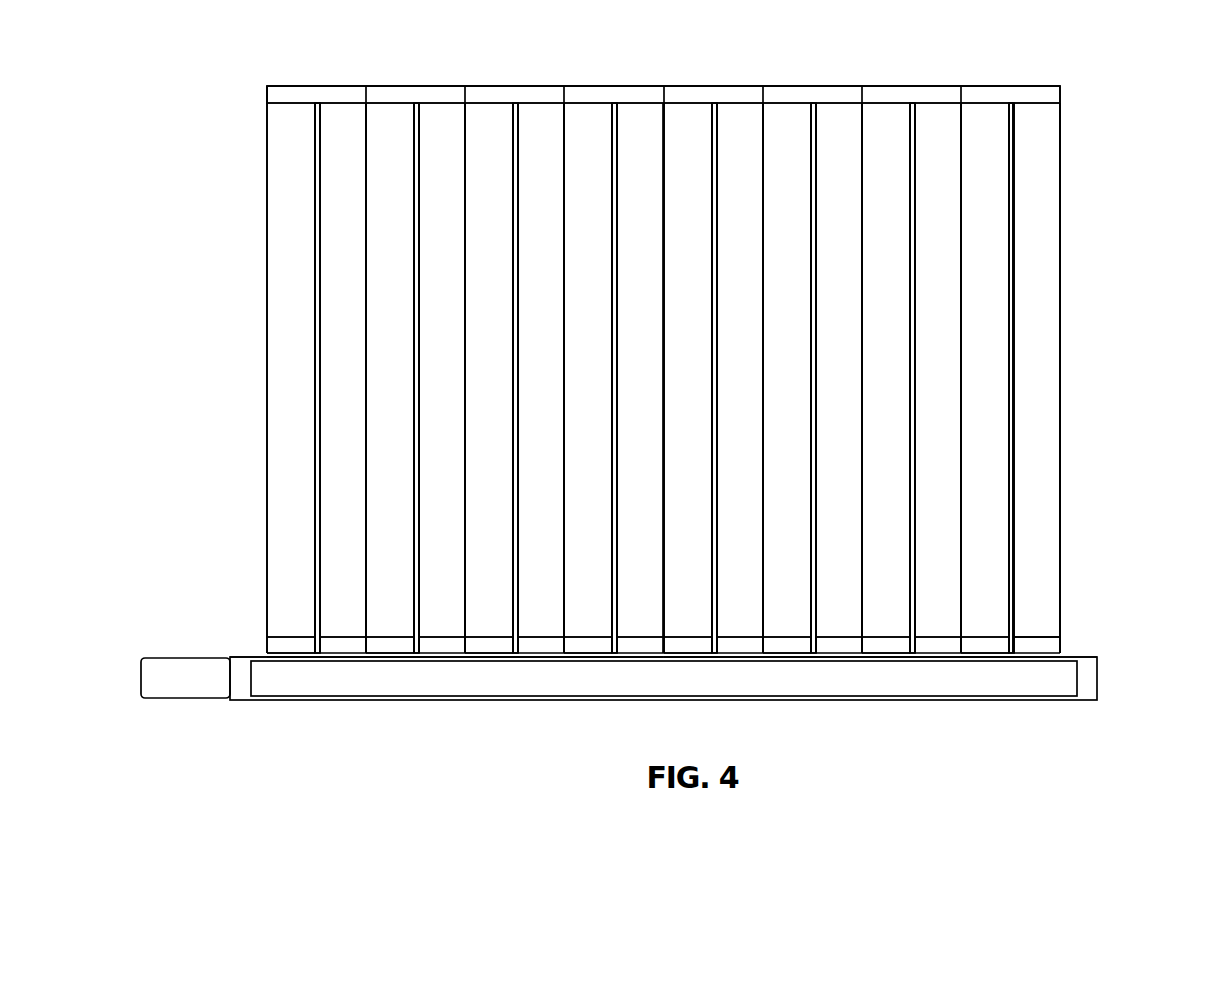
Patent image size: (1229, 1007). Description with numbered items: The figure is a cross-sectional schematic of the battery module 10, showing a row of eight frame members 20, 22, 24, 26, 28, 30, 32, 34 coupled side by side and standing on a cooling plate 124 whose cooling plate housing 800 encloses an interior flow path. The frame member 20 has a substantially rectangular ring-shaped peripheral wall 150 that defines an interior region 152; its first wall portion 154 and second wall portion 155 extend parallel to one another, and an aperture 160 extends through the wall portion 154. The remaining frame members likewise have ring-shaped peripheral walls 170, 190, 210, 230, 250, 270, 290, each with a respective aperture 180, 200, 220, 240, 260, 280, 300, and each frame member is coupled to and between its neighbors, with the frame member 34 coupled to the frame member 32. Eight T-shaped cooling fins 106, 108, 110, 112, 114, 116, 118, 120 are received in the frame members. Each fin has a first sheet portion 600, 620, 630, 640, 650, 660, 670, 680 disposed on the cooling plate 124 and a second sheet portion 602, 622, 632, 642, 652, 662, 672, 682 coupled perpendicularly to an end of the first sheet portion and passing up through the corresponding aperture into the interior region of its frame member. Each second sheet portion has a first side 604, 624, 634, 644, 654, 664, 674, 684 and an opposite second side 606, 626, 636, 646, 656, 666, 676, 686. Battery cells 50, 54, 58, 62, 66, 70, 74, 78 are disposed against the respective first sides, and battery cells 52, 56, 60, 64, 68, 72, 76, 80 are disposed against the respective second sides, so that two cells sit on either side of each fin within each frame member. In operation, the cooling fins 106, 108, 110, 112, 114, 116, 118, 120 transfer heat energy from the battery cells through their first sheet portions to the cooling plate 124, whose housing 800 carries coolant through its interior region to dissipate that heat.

The battery module 10 is at (1172, 124).
The battery cell 50 is at (1047, 122).
The peripheral wall 150 is at (1043, 93).
The interior region 152 is at (1050, 632).
The first wall portion 154 is at (1037, 596).
The second wall portion 155 is at (1035, 104).
The cooling plate 124 is at (1098, 662).
The cooling plate housing 800 is at (1097, 675).
The frame member 20 is at (985, 590).
The frame member 22 is at (886, 590).
The frame member 24 is at (787, 590).
The frame member 26 is at (688, 590).
The frame member 28 is at (588, 590).
The frame member 30 is at (489, 590).
The frame member 32 is at (390, 590).
The frame member 34 is at (291, 590).
The battery cell 52 is at (975, 345).
The battery cell 54 is at (945, 345).
The battery cell 56 is at (876, 345).
The battery cell 58 is at (846, 345).
The battery cell 60 is at (777, 345).
The battery cell 62 is at (747, 345).
The battery cell 64 is at (678, 345).
The battery cell 66 is at (647, 345).
The battery cell 68 is at (578, 345).
The battery cell 70 is at (548, 345).
The battery cell 72 is at (479, 345).
The battery cell 74 is at (449, 345).
The battery cell 76 is at (380, 345).
The battery cell 78 is at (350, 345).
The battery cell 80 is at (281, 345).
The cooling fin 106 is at (1004, 333).
The cooling fin 108 is at (904, 333).
The cooling fin 110 is at (805, 333).
The cooling fin 112 is at (706, 333).
The cooling fin 114 is at (606, 333).
The cooling fin 116 is at (507, 333).
The cooling fin 118 is at (408, 333).
The cooling fin 120 is at (309, 333).
The aperture 160 is at (985, 696).
The peripheral wall 170 is at (938, 596).
The aperture 180 is at (886, 696).
The peripheral wall 190 is at (839, 596).
The aperture 200 is at (787, 696).
The peripheral wall 210 is at (740, 596).
The aperture 220 is at (688, 696).
The peripheral wall 230 is at (640, 596).
The aperture 240 is at (588, 696).
The peripheral wall 250 is at (541, 596).
The aperture 260 is at (489, 696).
The peripheral wall 270 is at (442, 596).
The aperture 280 is at (390, 696).
The peripheral wall 290 is at (343, 596).
The aperture 300 is at (291, 696).
The first sheet portion 600 is at (1010, 704).
The second sheet portion 602 is at (1013, 462).
The first side 604 is at (1013, 334).
The second side 606 is at (990, 378).
The first sheet portion 620 is at (911, 704).
The second sheet portion 622 is at (936, 378).
The first side 624 is at (936, 378).
The second side 626 is at (891, 378).
The first sheet portion 630 is at (812, 704).
The second sheet portion 632 is at (837, 378).
The first side 634 is at (837, 378).
The second side 636 is at (792, 378).
The first sheet portion 640 is at (713, 704).
The second sheet portion 642 is at (738, 378).
The first side 644 is at (738, 378).
The second side 646 is at (693, 378).
The first sheet portion 650 is at (613, 704).
The second sheet portion 652 is at (638, 378).
The first side 654 is at (638, 378).
The second side 656 is at (593, 378).
The first sheet portion 660 is at (514, 704).
The second sheet portion 662 is at (539, 378).
The first side 664 is at (539, 378).
The second side 666 is at (494, 378).
The first sheet portion 670 is at (415, 704).
The second sheet portion 672 is at (440, 378).
The first side 674 is at (440, 378).
The second side 676 is at (395, 378).
The first sheet portion 680 is at (316, 704).
The second sheet portion 682 is at (341, 378).
The first side 684 is at (341, 378).
The second side 686 is at (296, 378).